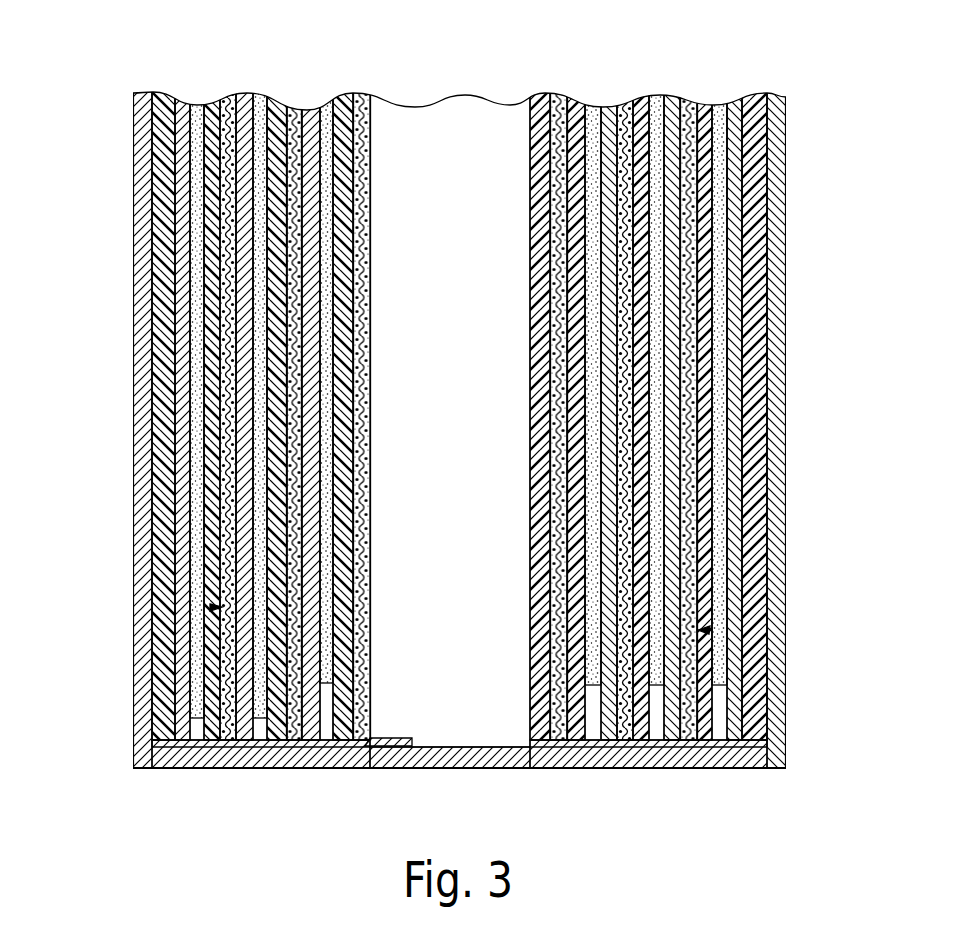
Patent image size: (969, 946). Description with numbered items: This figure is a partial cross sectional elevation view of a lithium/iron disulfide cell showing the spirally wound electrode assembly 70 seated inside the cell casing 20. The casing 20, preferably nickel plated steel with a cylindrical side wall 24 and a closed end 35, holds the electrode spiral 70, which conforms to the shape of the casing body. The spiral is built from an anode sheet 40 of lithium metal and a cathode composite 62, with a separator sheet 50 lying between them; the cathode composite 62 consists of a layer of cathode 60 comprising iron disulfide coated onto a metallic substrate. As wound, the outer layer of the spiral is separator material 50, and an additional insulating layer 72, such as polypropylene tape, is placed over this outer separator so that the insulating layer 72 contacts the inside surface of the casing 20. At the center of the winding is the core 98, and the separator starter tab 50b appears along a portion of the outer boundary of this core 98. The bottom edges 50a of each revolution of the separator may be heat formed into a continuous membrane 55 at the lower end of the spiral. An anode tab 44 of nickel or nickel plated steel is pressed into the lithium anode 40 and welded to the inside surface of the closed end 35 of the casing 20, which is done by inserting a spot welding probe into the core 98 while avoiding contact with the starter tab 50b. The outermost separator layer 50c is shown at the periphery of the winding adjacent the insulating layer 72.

The casing 20 is at (133, 223).
The casing side wall 24 is at (135, 508).
The closed end of casing 35 is at (630, 750).
The anode sheet 40 is at (181, 102).
The anode tab 44 is at (383, 746).
The separator sheet 50 is at (183, 99).
The bottom edges of separator 50a is at (242, 742).
The separator starter tab 50b is at (540, 93).
The outermost electrode layer 50c is at (745, 480).
The continuous membrane 55 is at (320, 742).
The cathode 60 is at (228, 103).
The cathode composite 62 is at (212, 607).
The spirally wound electrode assembly 70 is at (160, 675).
The insulating layer 72 is at (158, 307).
The core 98 is at (463, 393).